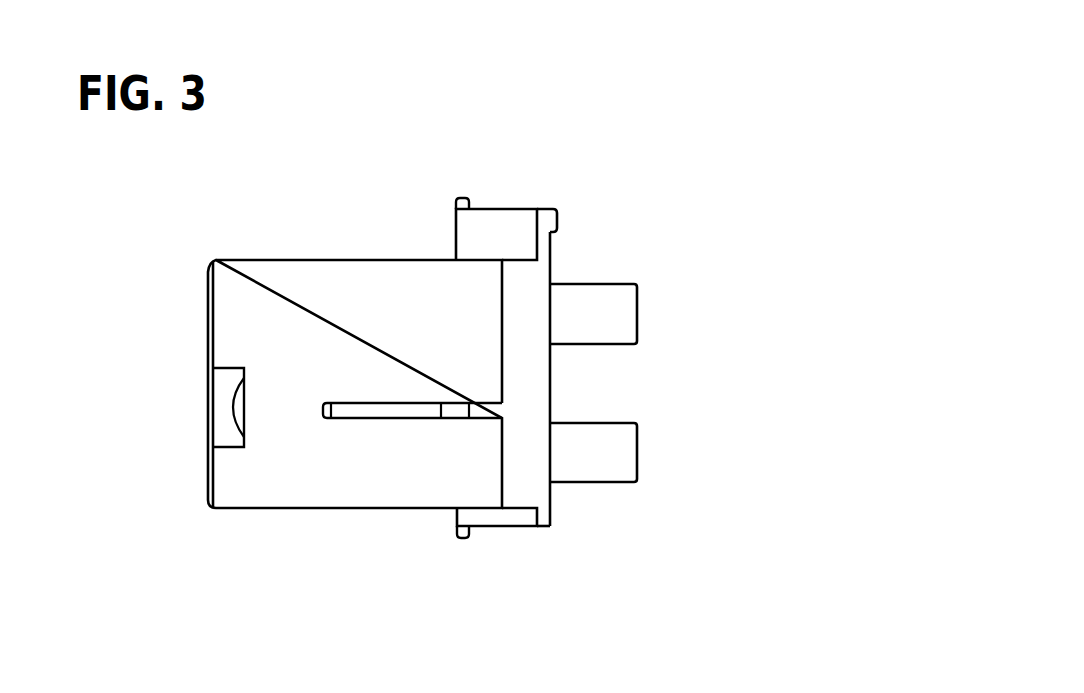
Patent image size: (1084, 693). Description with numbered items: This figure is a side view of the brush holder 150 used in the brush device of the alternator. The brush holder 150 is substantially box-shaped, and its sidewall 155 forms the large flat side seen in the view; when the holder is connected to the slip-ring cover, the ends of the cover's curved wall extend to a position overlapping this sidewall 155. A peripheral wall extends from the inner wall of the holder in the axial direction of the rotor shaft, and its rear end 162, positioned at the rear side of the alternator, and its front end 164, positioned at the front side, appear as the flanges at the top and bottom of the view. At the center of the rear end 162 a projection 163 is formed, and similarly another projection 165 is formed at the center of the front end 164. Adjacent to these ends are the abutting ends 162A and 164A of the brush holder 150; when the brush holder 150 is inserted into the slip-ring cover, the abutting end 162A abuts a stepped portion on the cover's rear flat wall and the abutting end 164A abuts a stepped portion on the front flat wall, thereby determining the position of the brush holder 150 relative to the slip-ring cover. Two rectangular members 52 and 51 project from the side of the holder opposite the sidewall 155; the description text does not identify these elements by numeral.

The brush holder 150 is at (527, 377).
The sidewall 155 is at (369, 468).
The rear end of the peripheral wall 162 is at (506, 209).
The abutting end 162A is at (551, 222).
The projection 163 is at (462, 198).
The front end of the peripheral wall 164 is at (518, 527).
The abutting end 164A is at (555, 515).
The projection 165 is at (462, 539).
The terminal 52 is at (615, 319).
The terminal 51 is at (615, 455).